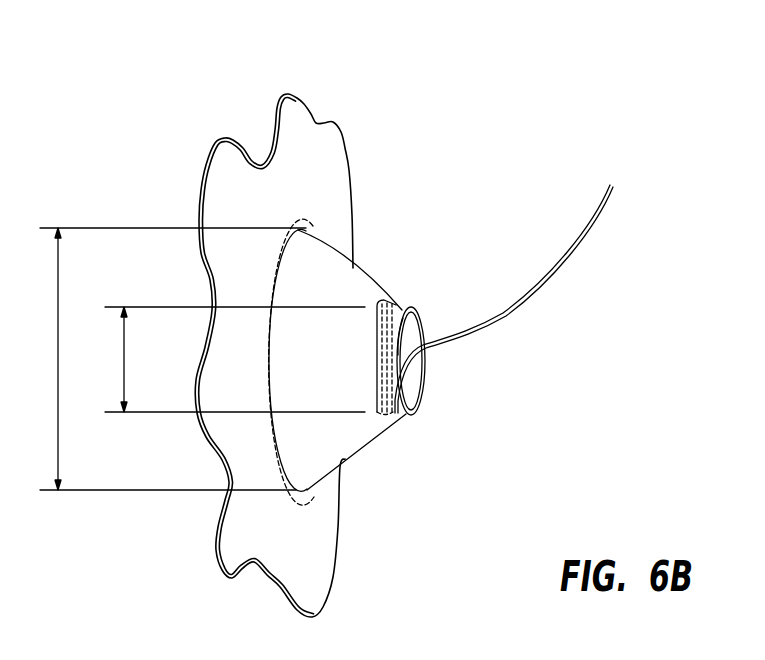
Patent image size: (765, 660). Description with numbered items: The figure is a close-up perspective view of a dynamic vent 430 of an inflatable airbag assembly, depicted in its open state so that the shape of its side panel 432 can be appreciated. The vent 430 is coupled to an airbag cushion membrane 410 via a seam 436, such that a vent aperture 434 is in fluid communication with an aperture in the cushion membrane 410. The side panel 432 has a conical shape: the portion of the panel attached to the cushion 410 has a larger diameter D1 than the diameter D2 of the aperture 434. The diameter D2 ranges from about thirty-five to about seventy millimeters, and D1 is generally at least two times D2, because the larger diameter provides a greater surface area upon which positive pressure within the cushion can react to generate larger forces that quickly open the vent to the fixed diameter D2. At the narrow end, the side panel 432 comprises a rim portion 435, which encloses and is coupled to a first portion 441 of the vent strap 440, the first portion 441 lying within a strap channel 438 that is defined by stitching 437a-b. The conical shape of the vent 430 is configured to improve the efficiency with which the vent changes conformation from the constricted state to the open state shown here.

The airbag cushion membrane 410 is at (303, 127).
The dynamic vent 430 is at (383, 240).
The side panel 432 is at (357, 437).
The vent aperture 434 is at (406, 392).
The rim portion 435 is at (425, 387).
The seam 436 is at (312, 228).
The stitching 437a-b is at (377, 297).
The strap channel 438 is at (372, 348).
The vent strap 440 is at (578, 252).
The first portion of tether 441 is at (398, 331).
The diameter of side panel at cushion D1 is at (165, 359).
The diameter of vent aperture D2 is at (230, 359).